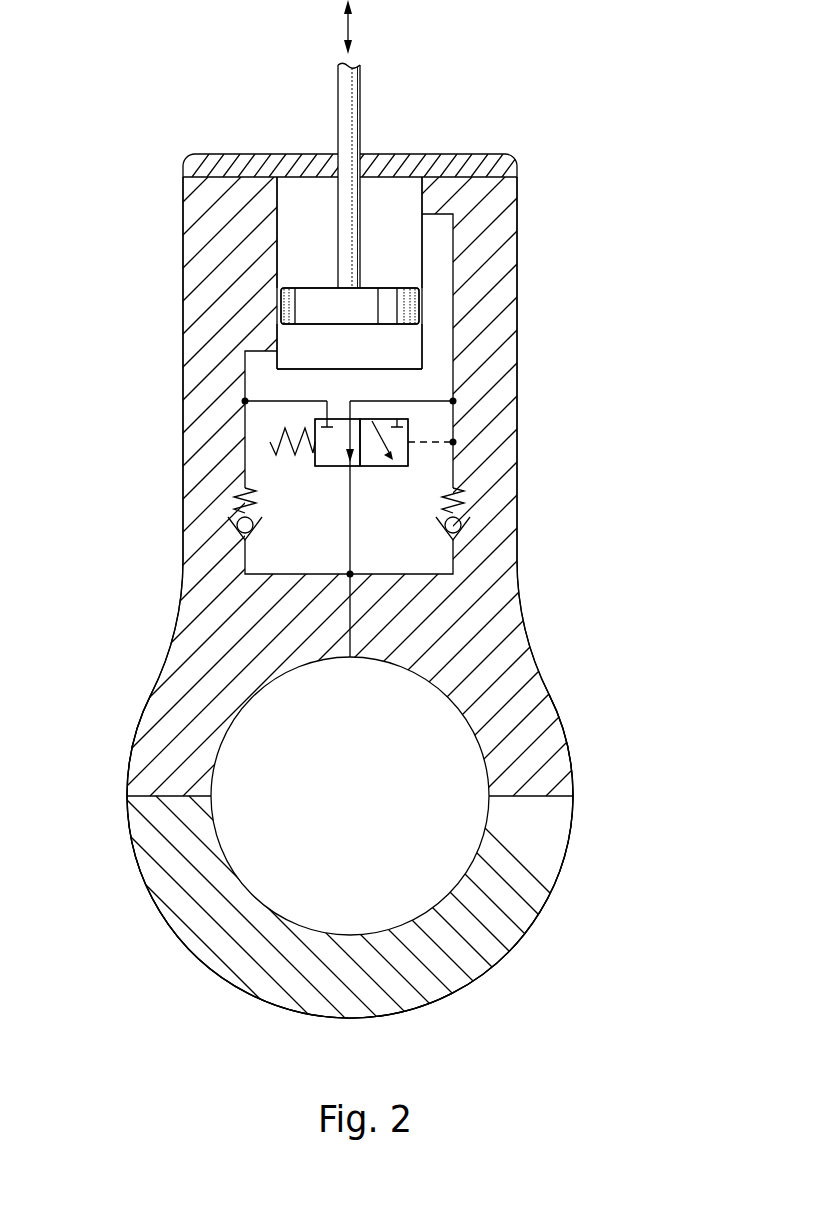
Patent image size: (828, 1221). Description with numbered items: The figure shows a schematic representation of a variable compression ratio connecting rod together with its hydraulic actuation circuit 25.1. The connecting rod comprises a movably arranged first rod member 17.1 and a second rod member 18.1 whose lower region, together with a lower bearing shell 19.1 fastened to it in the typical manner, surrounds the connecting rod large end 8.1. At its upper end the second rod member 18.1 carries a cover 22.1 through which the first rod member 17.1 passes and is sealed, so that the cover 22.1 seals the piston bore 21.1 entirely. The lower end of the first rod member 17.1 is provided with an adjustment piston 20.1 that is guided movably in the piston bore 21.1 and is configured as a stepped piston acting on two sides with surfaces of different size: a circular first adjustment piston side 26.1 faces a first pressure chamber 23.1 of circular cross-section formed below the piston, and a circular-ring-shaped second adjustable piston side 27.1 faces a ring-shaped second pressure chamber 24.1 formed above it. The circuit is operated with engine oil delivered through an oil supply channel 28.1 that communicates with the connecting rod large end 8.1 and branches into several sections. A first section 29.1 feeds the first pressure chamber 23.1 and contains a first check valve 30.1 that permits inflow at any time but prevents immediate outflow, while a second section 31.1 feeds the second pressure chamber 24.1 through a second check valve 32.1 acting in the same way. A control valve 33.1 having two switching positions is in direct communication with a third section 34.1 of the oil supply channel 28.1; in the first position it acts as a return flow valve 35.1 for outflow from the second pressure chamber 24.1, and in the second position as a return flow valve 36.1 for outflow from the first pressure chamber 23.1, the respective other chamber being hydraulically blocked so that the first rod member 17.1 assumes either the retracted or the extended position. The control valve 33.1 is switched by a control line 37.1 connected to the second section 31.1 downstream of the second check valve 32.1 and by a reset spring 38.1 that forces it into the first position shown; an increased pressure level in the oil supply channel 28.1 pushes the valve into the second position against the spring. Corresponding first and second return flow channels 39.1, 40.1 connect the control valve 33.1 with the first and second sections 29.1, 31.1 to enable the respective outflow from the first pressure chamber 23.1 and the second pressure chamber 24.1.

The connecting rod large end 8.1 is at (568, 926).
The first rod member 17.1 is at (363, 99).
The second rod member 18.1 is at (510, 359).
The lower bearing shell 19.1 is at (180, 920).
The adjustment piston 20.1 is at (270, 307).
The piston bore 21.1 is at (272, 230).
The cover 22.1 is at (513, 164).
The first pressure chamber 23.1 is at (414, 336).
The second pressure chamber 24.1 is at (303, 196).
The hydraulic actuation circuit 25.1 is at (470, 460).
The first adjustment piston side 26.1 is at (313, 327).
The second adjustable piston side 27.1 is at (400, 277).
The oil supply channel 28.1 is at (350, 629).
The first section 29.1 is at (243, 558).
The first check valve 30.1 is at (227, 520).
The second section 31.1 is at (455, 560).
The second check valve 32.1 is at (465, 525).
The control valve 33.1 is at (228, 425).
The third section 34.1 is at (348, 545).
The return flow valve 35.1 is at (329, 477).
The return flow valve 36.1 is at (372, 478).
The control line 37.1 is at (431, 443).
The reset spring 38.1 is at (270, 450).
The first return flow channel 39.1 is at (272, 400).
The second return flow channel 40.1 is at (422, 398).